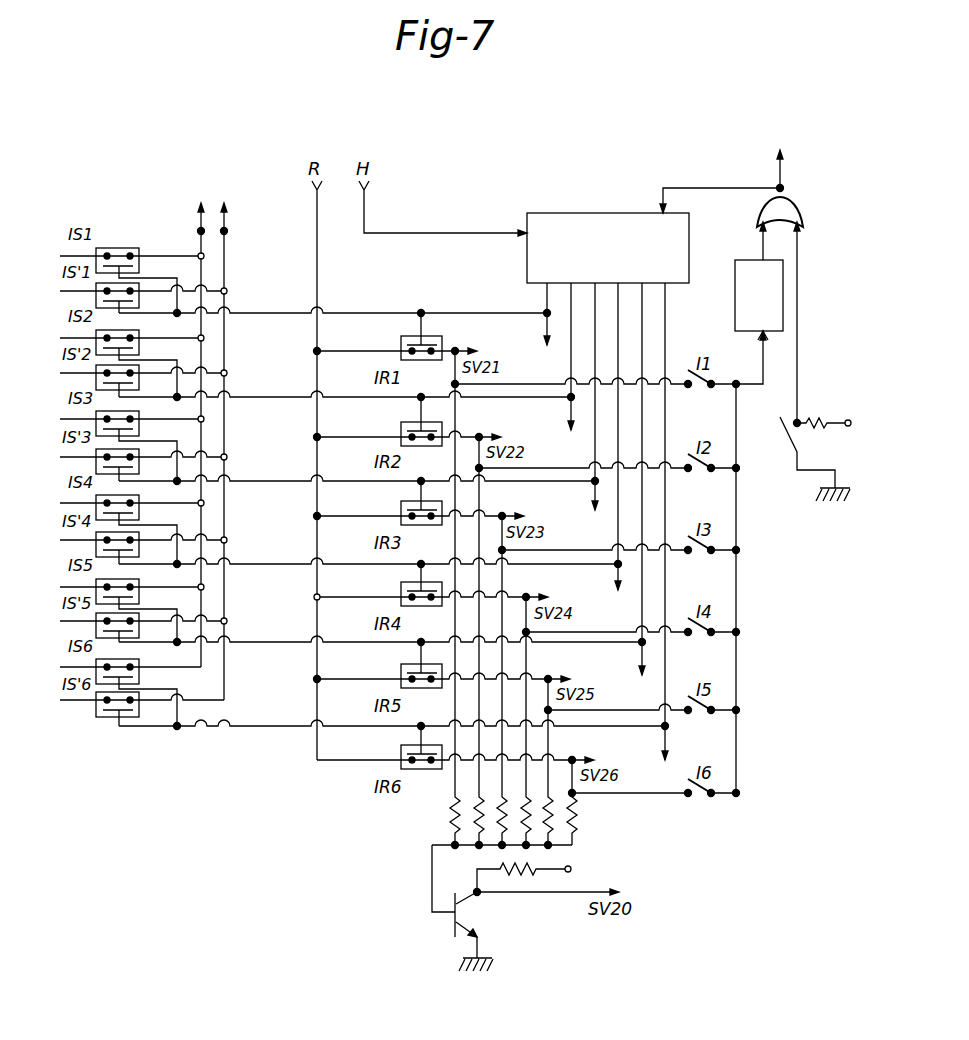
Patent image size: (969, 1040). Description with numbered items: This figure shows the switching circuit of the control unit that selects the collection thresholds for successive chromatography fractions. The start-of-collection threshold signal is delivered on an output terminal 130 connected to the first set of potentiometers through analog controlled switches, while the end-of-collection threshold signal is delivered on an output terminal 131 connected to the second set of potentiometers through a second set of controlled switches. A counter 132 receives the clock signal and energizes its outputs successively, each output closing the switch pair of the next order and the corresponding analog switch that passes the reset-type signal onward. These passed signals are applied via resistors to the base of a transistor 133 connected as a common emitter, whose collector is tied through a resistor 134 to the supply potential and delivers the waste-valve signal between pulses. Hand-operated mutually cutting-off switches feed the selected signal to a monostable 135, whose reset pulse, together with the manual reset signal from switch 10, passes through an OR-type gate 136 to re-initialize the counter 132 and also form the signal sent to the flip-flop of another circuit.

The switch 10 is at (790, 437).
The output terminal 130 is at (201, 231).
The output terminal 131 is at (226, 231).
The counter 132 is at (659, 444).
The transistor 133 is at (454, 922).
The resistor 134 is at (522, 877).
The monostable 135 is at (770, 306).
The OR-type gate 136 is at (785, 210).